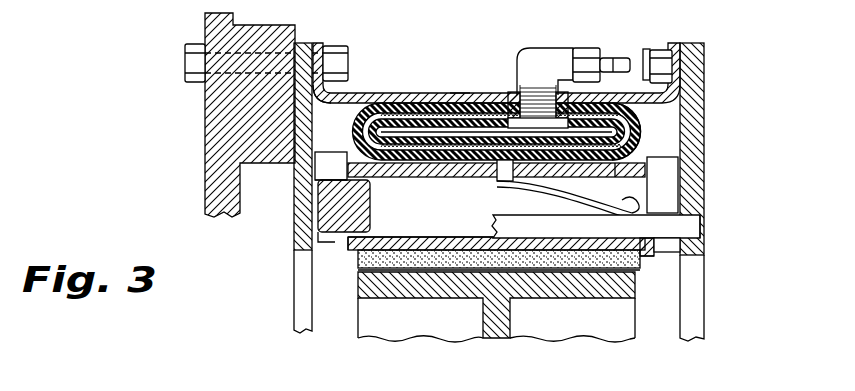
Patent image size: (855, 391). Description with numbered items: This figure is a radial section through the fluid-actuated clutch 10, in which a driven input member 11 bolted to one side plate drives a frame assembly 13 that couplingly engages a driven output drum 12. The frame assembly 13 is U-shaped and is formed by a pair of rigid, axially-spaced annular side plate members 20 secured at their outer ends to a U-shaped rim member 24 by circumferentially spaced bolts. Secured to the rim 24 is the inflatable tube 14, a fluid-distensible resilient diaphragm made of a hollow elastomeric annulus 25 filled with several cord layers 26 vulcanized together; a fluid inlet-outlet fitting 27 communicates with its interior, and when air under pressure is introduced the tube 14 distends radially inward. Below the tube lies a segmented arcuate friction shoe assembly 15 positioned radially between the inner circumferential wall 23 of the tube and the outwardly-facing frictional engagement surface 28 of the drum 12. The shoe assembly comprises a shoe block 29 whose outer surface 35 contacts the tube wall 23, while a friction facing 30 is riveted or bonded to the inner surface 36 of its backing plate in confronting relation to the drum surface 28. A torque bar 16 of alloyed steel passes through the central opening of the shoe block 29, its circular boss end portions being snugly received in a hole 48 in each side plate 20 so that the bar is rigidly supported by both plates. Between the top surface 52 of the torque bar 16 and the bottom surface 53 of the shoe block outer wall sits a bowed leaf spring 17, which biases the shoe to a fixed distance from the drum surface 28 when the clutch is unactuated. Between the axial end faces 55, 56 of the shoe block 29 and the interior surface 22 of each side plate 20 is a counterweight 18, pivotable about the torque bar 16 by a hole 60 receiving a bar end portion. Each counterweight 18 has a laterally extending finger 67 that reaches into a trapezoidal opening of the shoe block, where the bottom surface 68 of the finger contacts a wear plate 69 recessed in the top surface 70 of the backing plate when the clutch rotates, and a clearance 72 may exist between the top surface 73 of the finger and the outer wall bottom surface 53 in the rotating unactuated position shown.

The clutch 10 is at (460, 86).
The driven input member 11 is at (204, 134).
The drum 12 is at (358, 286).
The annular frame assembly 13 is at (364, 92).
The inflatable tube 14 is at (641, 126).
The friction shoe assembly 15 is at (642, 275).
The torque bar 16 is at (703, 222).
The leaf spring 17 is at (513, 172).
The counterweight 18 is at (320, 170).
The side plate member 20 is at (300, 243).
The interior surface 22 is at (316, 103).
The inner circumferential wall 23 is at (426, 163).
The rim member 24 is at (414, 93).
The elastomeric annulus 25 is at (628, 198).
The cord layers 26 is at (468, 150).
The fluid inlet-outlet fitting 27 is at (543, 50).
The frictional engagement surface 28 is at (380, 299).
The shoe block 29 is at (455, 203).
The friction facing 30 is at (556, 270).
The outer surface 35 is at (362, 147).
The inner surface 36 is at (602, 270).
The hole 48 is at (690, 240).
The top surface 52 is at (513, 188).
The bottom surface 53 is at (562, 202).
The axial end face 55 is at (648, 255).
The axial end face 56 is at (348, 247).
The hole 60 is at (672, 262).
The finger 67 is at (325, 212).
The bottom surface 68 is at (318, 240).
The wear plate 69 is at (378, 238).
The top surface 70 is at (401, 212).
The clearance 72 is at (382, 177).
The top surface 73 is at (322, 182).